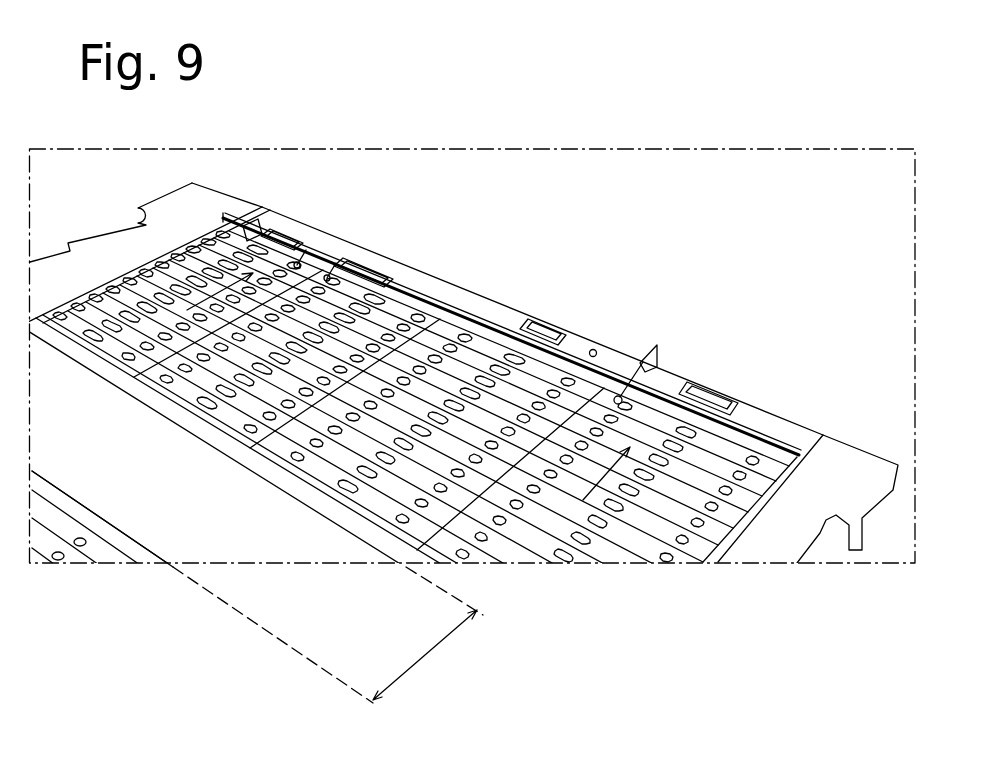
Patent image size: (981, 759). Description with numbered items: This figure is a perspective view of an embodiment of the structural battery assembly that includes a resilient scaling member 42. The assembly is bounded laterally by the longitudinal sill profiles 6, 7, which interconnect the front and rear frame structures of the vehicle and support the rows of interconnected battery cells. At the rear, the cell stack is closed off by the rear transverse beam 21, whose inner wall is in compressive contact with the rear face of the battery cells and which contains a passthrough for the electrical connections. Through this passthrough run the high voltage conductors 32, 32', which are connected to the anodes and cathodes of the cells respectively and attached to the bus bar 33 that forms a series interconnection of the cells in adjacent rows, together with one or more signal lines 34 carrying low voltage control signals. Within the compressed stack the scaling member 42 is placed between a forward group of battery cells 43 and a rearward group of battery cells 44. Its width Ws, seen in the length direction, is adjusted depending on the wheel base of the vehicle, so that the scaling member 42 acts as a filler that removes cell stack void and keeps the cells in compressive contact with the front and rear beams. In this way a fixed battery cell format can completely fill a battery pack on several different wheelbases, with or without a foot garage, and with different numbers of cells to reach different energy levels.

The longitudinal sill profile 6 is at (212, 197).
The longitudinal sill profile 7 is at (842, 447).
The rear transverse beam 21 is at (443, 293).
The high voltage conductor 32 is at (632, 342).
The high voltage conductor 32' is at (295, 228).
The bus bar 33 is at (485, 325).
The signal line 34 is at (700, 393).
The scaling member 42 is at (253, 540).
The forward group of battery cells 43 is at (70, 527).
The rearward group of battery cells 44 is at (362, 325).
The width of the scaling member Ws is at (430, 655).